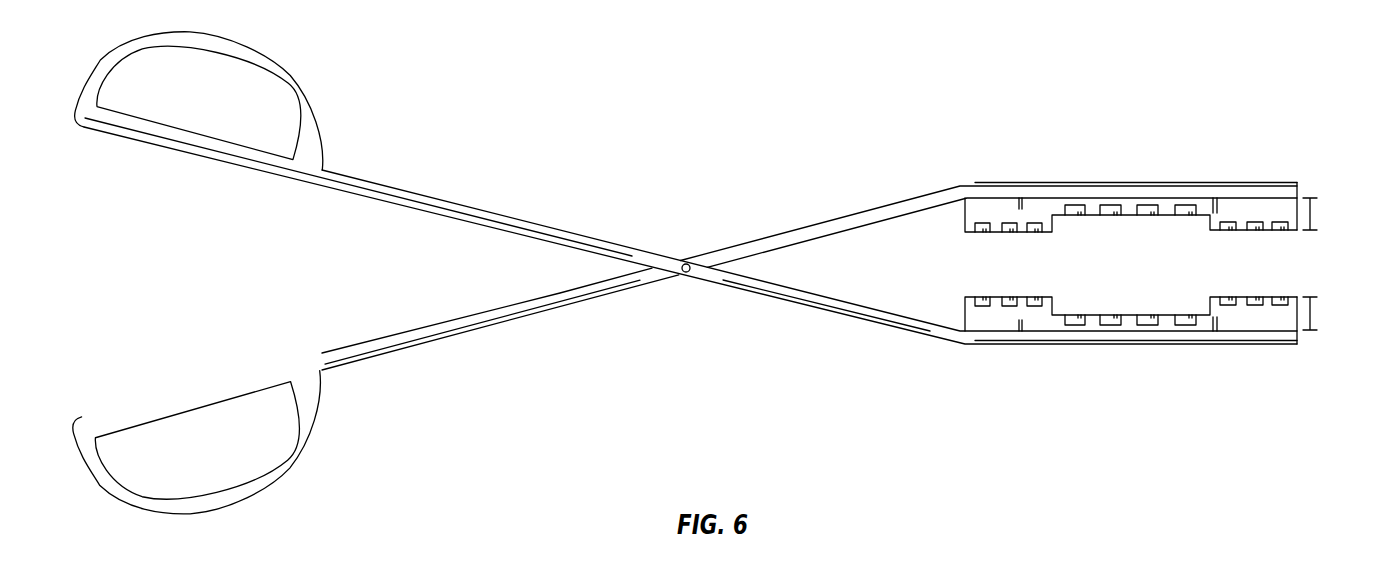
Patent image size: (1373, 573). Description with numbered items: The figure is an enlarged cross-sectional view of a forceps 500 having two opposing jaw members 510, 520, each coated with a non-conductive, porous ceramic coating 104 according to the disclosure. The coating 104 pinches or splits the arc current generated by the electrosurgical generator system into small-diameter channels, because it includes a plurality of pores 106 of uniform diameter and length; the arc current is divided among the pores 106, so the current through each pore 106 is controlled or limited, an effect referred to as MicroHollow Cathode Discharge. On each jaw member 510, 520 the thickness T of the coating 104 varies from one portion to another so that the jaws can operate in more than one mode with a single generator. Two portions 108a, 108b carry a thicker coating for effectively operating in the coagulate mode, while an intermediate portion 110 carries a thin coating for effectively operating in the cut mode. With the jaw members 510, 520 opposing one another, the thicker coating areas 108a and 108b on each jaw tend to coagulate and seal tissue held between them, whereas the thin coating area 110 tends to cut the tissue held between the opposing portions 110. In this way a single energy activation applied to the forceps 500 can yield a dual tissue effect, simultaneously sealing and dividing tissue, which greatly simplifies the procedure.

The surgical forceps instrument 500 is at (717, 273).
The first jaw 510 is at (1177, 172).
The second jaw 520 is at (1177, 353).
The non-conductive, porous ceramic coating 104 is at (958, 208).
The pores 106 is at (1290, 228).
The first coating portion 108a is at (1297, 236).
The second coating portion 108b is at (1050, 236).
The cut-mode coating portion 110 is at (1210, 236).
The coating thickness T is at (1314, 212).